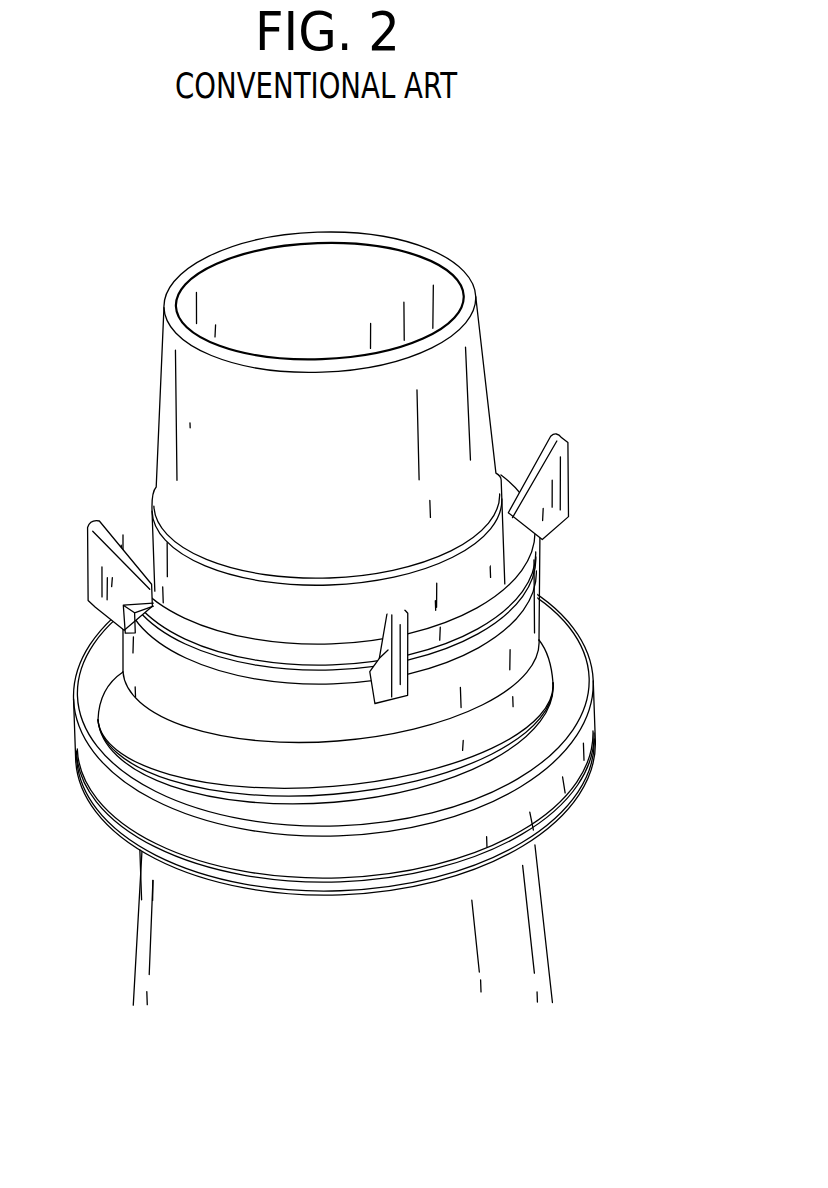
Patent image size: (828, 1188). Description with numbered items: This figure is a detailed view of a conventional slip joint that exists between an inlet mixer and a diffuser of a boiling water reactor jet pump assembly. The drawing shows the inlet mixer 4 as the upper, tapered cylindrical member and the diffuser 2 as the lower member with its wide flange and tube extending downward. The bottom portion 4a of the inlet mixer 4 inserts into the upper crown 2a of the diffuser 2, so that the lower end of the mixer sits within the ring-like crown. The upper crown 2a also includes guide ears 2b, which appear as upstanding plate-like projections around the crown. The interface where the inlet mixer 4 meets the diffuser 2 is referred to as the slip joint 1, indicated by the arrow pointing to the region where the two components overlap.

The slip joint 1 is at (378, 622).
The diffuser 2 is at (473, 957).
The upper crown 2a is at (483, 675).
The guide ears 2b is at (548, 492).
The inlet mixer 4 is at (452, 393).
The bottom portion 4a is at (167, 548).